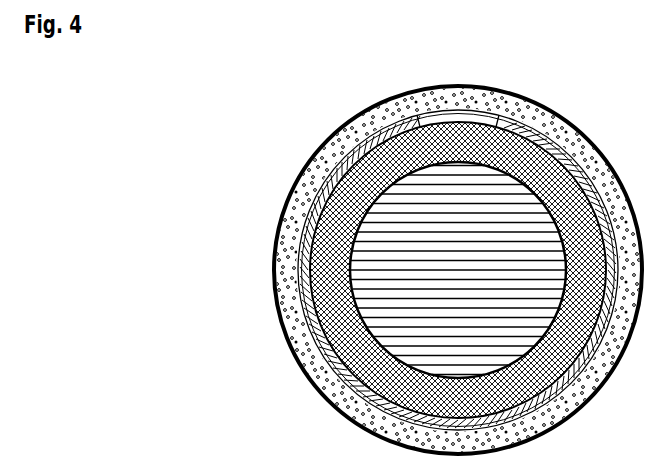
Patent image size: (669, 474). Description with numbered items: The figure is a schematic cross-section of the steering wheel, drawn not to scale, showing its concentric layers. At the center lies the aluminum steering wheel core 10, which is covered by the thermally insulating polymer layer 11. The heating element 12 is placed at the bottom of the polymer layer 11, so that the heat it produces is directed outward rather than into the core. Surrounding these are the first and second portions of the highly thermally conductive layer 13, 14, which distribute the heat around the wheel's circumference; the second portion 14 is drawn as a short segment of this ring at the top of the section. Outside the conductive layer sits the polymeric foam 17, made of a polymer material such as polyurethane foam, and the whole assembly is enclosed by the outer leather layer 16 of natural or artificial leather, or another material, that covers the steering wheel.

The aluminum steering wheel core 10 is at (460, 258).
The thermally insulating polymer layer 11 is at (543, 148).
The heating element 12 is at (410, 415).
The first portion of the highly thermally conductive layer 13 is at (323, 338).
The second portion of the highly thermally conductive layer 14 is at (458, 118).
The leather layer 16 is at (548, 433).
The polymeric foam 17 is at (307, 182).